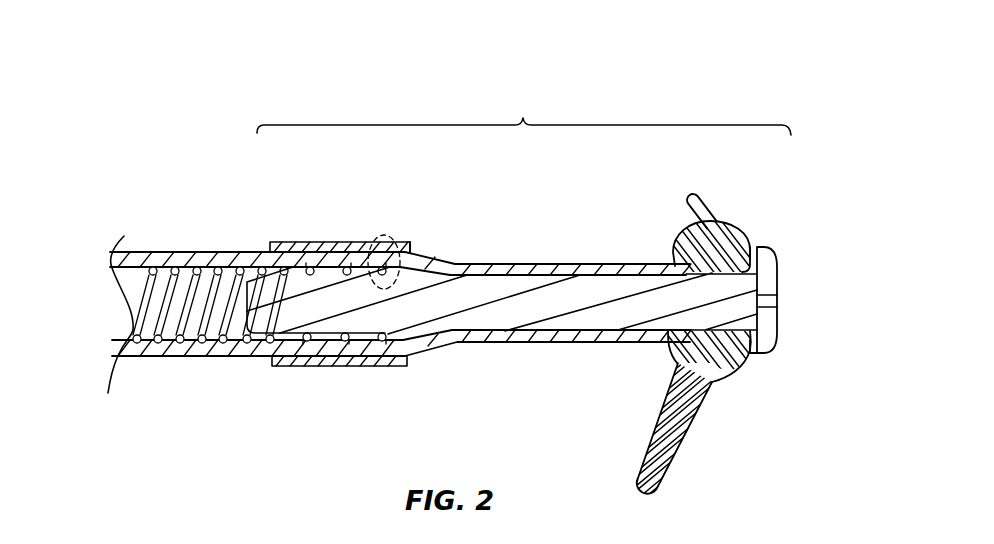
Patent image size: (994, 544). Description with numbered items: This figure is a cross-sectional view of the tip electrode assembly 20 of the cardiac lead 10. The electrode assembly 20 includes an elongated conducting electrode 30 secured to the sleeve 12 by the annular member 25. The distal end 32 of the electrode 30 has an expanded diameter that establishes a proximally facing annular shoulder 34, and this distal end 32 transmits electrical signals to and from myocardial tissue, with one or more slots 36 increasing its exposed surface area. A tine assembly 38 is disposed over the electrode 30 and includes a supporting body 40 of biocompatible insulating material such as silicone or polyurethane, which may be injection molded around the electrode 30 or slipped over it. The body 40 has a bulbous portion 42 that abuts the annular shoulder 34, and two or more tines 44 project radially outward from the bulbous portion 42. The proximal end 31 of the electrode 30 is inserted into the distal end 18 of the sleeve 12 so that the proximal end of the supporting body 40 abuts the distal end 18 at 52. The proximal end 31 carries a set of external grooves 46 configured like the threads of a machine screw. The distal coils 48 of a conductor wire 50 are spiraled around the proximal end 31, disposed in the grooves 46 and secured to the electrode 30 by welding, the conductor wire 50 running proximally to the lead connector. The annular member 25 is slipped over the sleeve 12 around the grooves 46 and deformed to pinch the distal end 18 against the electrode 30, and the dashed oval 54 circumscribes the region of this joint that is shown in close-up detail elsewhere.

The lead 10 is at (383, 118).
The sleeve 12 is at (158, 252).
The distal end of the sleeve 18 is at (208, 252).
The tip electrode assembly 20 is at (541, 298).
The annular member 25 is at (362, 240).
The electrode 30 is at (498, 283).
The proximal end of the electrode 31 is at (258, 252).
The distal end of the electrode 32 is at (767, 268).
The annular shoulder 34 is at (737, 237).
The slots 36 is at (777, 303).
The tine assembly 38 is at (672, 237).
The supporting body 40 is at (645, 263).
The bulbous portion 42 is at (677, 363).
The tines 44 is at (705, 197).
The external grooves 46 is at (340, 358).
The distal coils 48 is at (340, 243).
The conductor wire 50 is at (172, 357).
The abutment location 52 is at (505, 350).
The dashed oval 54 is at (398, 238).